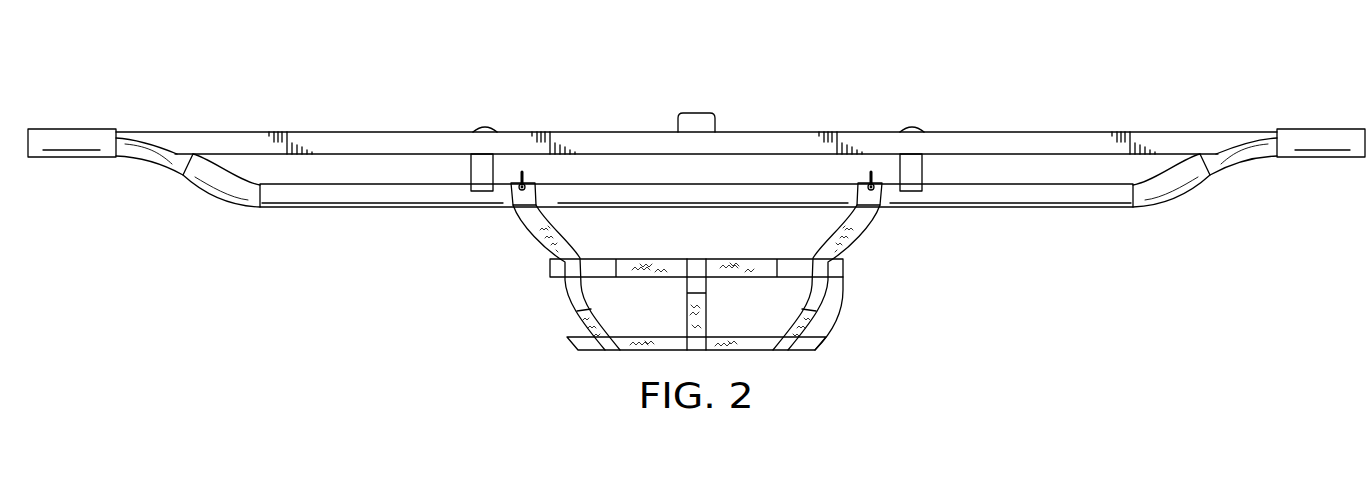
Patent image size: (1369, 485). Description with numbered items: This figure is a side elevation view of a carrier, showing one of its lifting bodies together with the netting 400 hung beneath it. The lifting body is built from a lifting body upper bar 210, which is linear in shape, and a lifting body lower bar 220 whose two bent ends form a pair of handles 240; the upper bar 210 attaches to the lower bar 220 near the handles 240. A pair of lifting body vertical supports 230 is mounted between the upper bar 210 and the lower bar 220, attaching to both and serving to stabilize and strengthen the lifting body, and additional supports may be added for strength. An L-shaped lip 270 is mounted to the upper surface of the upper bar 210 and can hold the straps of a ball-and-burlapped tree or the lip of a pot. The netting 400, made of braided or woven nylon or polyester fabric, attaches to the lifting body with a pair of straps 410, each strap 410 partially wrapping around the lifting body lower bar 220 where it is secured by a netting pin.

The lifting body upper bar 210 is at (1076, 131).
The lifting body lower bar 220 is at (1032, 208).
The lifting body vertical supports 230 is at (470, 177).
The handles 240 is at (72, 129).
The L-shaped lip 270 is at (697, 112).
The netting 400 is at (733, 280).
The straps 410 is at (533, 237).